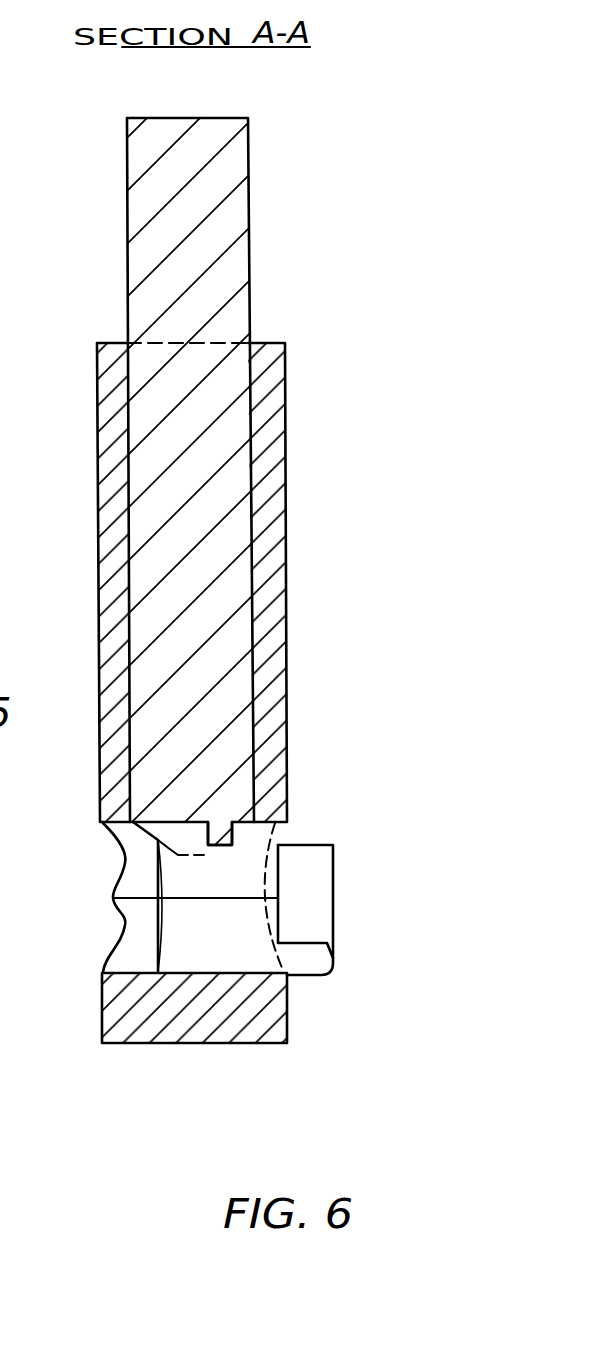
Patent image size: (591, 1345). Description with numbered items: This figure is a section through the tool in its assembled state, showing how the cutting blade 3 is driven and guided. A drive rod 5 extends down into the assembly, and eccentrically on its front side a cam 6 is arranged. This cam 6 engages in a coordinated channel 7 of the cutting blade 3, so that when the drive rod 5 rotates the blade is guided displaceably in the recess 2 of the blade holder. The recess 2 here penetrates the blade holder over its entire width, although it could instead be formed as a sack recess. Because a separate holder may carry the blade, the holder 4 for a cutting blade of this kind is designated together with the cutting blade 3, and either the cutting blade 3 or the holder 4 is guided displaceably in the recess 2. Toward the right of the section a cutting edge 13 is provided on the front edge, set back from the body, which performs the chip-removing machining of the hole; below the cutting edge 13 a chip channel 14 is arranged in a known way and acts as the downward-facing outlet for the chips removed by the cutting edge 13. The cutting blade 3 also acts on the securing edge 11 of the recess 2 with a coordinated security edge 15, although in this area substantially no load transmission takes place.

The recess 2 is at (122, 928).
The cutting blade 3 is at (278, 834).
The holder for a cutting blade 4 is at (225, 880).
The drive rod 5 is at (232, 205).
The cam 6 is at (289, 724).
The channel 7 is at (216, 820).
The securing edge 11 is at (264, 1027).
The cutting edge 13 is at (313, 848).
The chip channel 14 is at (313, 897).
The security edge 15 is at (217, 897).